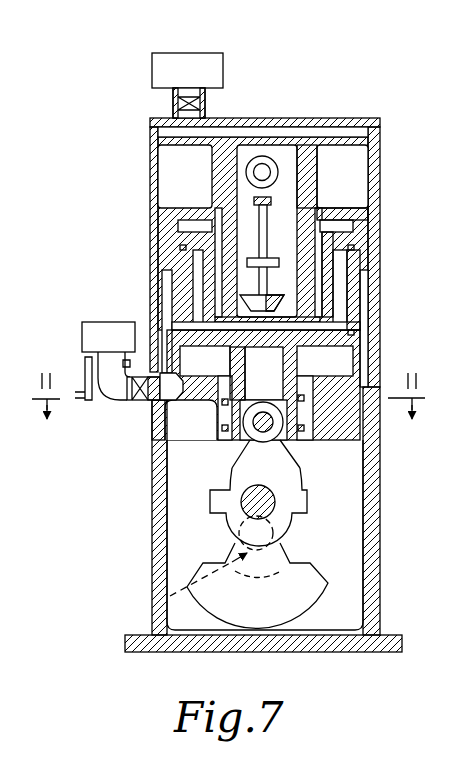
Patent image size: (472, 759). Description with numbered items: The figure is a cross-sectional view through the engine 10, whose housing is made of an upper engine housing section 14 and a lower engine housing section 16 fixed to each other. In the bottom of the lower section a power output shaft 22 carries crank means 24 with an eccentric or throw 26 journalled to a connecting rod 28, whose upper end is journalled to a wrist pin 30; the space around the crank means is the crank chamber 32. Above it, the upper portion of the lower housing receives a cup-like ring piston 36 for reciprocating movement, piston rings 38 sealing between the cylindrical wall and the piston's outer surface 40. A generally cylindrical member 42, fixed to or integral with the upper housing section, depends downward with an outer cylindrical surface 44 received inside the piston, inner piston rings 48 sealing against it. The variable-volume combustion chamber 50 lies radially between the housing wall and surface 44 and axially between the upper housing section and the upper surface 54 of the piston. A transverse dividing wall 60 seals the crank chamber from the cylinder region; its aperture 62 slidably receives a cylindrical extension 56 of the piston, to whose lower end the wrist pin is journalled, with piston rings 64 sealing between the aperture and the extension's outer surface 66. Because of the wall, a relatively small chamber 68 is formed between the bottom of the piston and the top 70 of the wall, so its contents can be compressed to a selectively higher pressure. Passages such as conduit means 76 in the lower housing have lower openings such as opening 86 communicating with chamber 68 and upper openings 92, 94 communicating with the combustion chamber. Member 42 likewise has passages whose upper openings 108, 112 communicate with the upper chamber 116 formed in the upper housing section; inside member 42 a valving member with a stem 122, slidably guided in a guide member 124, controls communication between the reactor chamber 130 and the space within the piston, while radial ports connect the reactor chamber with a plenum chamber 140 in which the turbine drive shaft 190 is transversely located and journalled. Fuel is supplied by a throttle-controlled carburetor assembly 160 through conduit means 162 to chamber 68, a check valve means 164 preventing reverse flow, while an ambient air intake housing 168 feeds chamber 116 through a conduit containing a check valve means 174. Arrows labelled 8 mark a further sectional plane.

The section line 8- 8 is at (234, 403).
The engine 10 is at (140, 538).
The upper engine housing section 14 is at (375, 146).
The lower engine housing section 16 is at (380, 556).
The power output shaft 22 is at (170, 596).
The crank means 24 is at (302, 608).
The eccentric or throw 26 is at (280, 507).
The connecting rod 28 is at (207, 497).
The wrist pin 30 is at (272, 441).
The crank chamber 32 is at (355, 587).
The ring piston 36 is at (347, 352).
The piston rings 38 is at (180, 248).
The outer surface of piston 40 is at (348, 318).
The cylindrical member 42 is at (358, 292).
The outer cylindrical surface 44 is at (198, 398).
The inner piston rings 48 is at (320, 278).
The combustion chamber 50 is at (345, 226).
The upper surface of ring piston 54 is at (175, 226).
The cylindrical extension 56 is at (233, 432).
The transverse dividing wall 60 is at (168, 440).
The aperture 62 is at (270, 437).
The piston rings 64 is at (304, 428).
The outer surface of extension 66 is at (232, 385).
The chamber 68 is at (313, 367).
The top of wall 70 is at (207, 430).
The passage 76 is at (162, 312).
The lower opening 86 is at (362, 382).
The upper opening 92 is at (178, 283).
The upper opening 94 is at (362, 272).
The upper opening 108 is at (227, 150).
The upper opening 112 is at (318, 147).
The upper chamber 116 is at (352, 130).
The valve stem 122 is at (297, 215).
The guide member 124 is at (252, 200).
The reactor chamber 130 is at (304, 150).
The plenum chamber 140 is at (180, 153).
The carburetor assembly 160 is at (78, 353).
The conduit means 162 is at (107, 385).
The check valve means 164 is at (152, 400).
The housing 168 is at (227, 52).
The check valve means 174 is at (173, 106).
The turbine drive shaft 190 is at (265, 157).